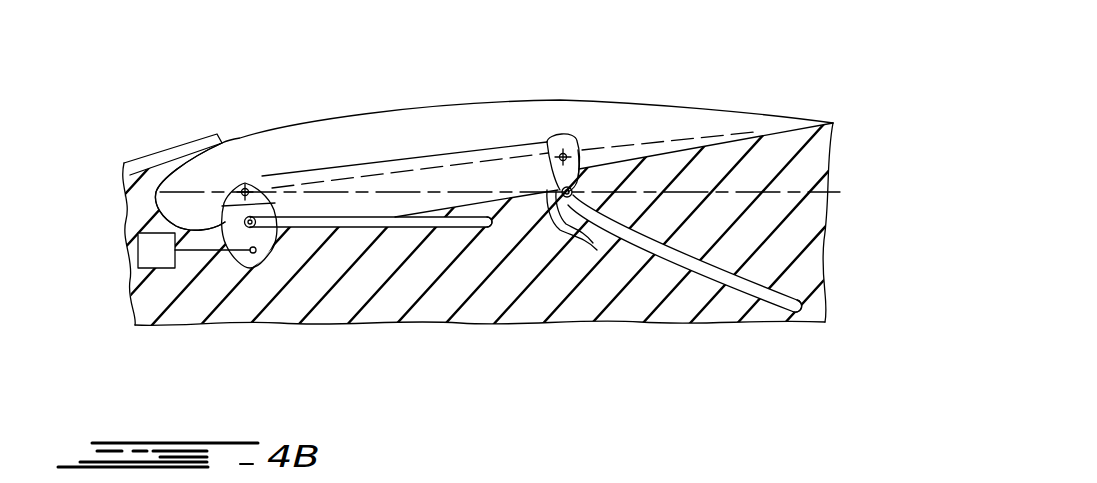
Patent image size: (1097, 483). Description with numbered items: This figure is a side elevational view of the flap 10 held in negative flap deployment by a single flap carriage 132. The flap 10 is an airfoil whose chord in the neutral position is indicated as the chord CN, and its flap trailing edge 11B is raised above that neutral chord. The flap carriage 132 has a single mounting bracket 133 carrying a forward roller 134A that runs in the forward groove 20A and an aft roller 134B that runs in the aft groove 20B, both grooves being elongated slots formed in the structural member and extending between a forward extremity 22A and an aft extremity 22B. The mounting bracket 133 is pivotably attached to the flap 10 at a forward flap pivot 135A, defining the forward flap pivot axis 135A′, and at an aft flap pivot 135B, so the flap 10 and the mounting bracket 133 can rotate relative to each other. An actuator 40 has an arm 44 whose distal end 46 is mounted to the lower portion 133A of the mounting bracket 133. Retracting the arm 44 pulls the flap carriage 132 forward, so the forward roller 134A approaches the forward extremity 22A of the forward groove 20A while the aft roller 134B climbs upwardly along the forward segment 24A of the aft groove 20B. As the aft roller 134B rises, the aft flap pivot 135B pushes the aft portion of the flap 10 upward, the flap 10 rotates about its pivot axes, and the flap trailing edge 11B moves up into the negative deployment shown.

The flap 10 is at (433, 103).
The flap trailing edge 11B is at (834, 118).
The chord of the flap in the neutral deployment position CN is at (748, 190).
The flap carriage 132 is at (367, 163).
The single mounting bracket 133 is at (517, 207).
The lower portion of the single mounting bracket 133A is at (274, 240).
The forward roller 134A is at (222, 229).
The aft roller 134B is at (574, 197).
The forward flap pivot 135A is at (240, 183).
The forward flap pivot axis 135A′ is at (248, 186).
The aft flap pivot 135B is at (545, 141).
The forward groove 20A is at (418, 228).
The aft groove 20B is at (683, 265).
The forward extremity 22A is at (222, 212).
The aft extremity 22B is at (492, 226).
The forward segment 24A is at (563, 250).
The actuator 40 is at (153, 270).
The arm 44 is at (202, 252).
The distal end 46 is at (253, 254).